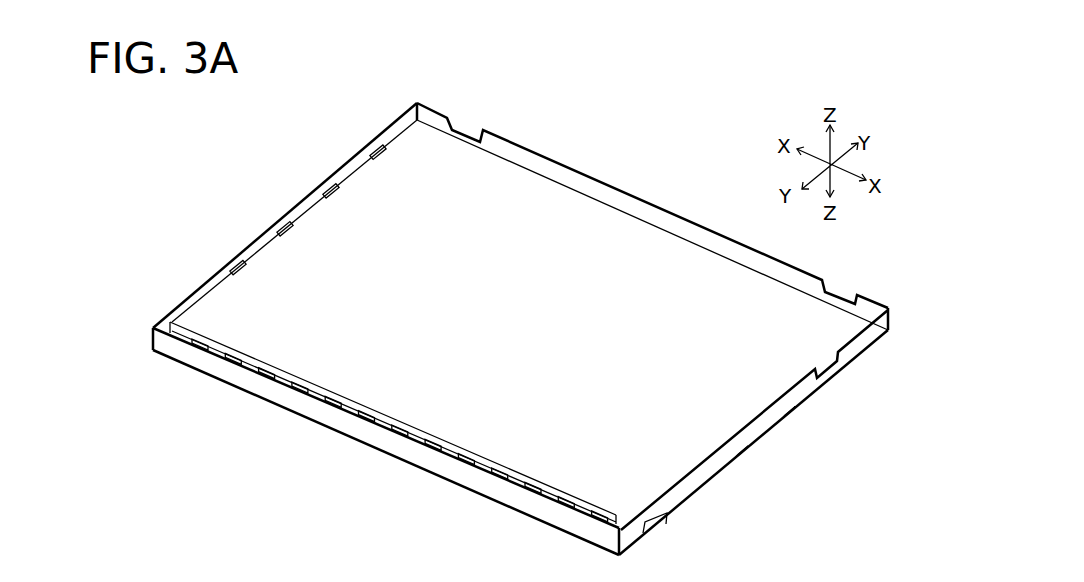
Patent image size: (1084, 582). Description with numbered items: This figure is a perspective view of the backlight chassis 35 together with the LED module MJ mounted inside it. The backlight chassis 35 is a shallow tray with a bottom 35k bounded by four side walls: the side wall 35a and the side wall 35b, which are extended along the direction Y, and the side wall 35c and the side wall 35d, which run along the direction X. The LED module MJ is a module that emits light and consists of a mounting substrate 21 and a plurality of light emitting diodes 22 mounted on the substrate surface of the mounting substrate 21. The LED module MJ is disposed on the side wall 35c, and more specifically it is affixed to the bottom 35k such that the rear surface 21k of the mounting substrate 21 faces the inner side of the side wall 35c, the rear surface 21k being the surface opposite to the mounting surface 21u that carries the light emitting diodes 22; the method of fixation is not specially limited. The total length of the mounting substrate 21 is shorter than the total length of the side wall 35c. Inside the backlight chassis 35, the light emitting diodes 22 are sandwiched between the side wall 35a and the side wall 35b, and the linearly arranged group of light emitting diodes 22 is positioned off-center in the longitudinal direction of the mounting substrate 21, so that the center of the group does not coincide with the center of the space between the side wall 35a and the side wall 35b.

The backlight chassis 35 is at (403, 88).
The side wall 35a is at (248, 244).
The side wall 35b is at (755, 432).
The side wall 35c is at (360, 428).
The side wall 35d is at (643, 197).
The bottom 35k is at (540, 343).
The mounting substrate 21 is at (273, 297).
The rear surface 21k is at (183, 325).
The mounting surface 21u is at (197, 336).
The light emitting diodes 22 is at (272, 367).
The LED module MJ is at (317, 297).